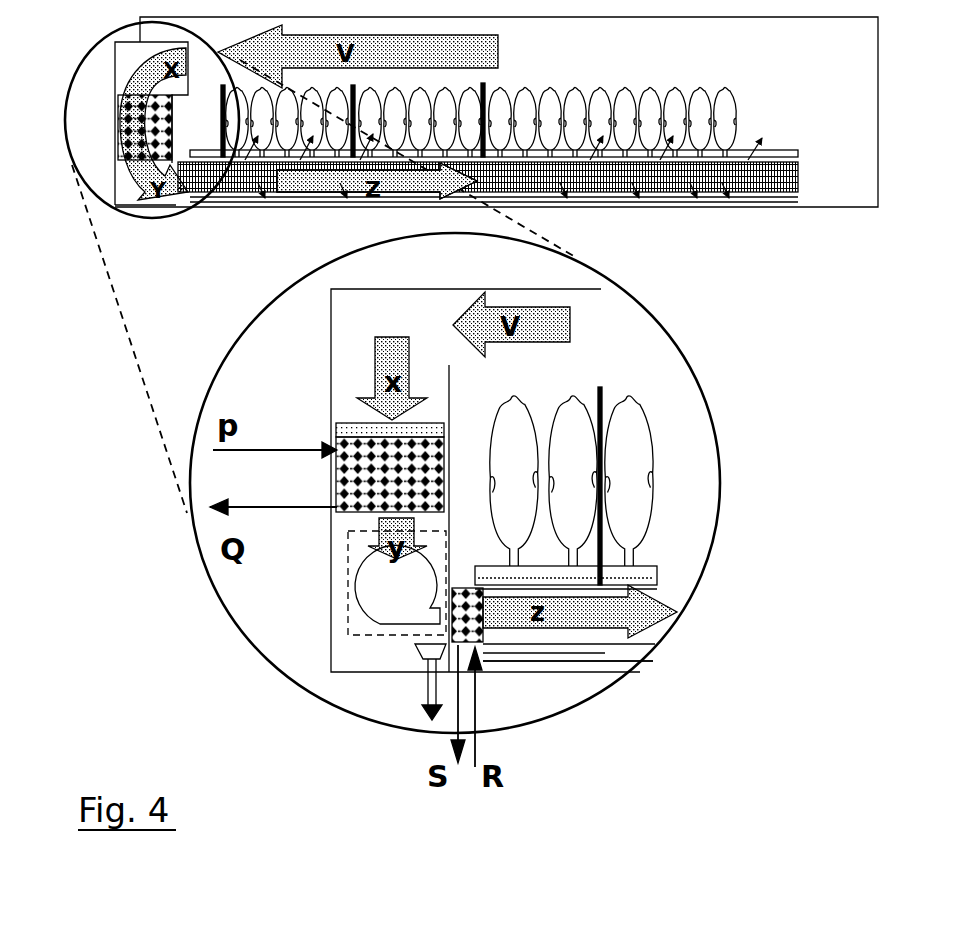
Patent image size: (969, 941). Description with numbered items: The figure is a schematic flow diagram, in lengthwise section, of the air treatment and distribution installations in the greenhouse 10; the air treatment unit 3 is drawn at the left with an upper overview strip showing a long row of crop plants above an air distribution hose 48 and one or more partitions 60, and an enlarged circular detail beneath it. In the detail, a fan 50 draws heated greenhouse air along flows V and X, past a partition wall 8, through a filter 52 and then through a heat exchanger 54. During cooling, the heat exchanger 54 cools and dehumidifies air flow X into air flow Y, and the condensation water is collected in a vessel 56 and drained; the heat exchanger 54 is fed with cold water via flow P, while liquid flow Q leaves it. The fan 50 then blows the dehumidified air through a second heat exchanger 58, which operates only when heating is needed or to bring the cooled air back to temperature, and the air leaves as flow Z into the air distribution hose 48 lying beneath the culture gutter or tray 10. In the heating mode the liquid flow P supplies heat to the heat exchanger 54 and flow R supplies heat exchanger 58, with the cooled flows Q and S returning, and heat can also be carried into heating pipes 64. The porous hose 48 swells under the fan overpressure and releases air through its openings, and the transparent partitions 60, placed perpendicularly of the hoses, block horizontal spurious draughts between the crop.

The air treatment unit 3 is at (346, 535).
The partition wall 8 is at (446, 363).
The greenhouse 10 is at (642, 572).
The air distribution hose 48 is at (682, 182).
The fan 50 is at (383, 583).
The filter 52 is at (342, 433).
The heat exchanger 54 is at (345, 480).
The vessel 56 is at (437, 655).
The heat exchanger 58 is at (480, 640).
The partition 60 is at (598, 385).
The heating pipes 64 is at (615, 655).